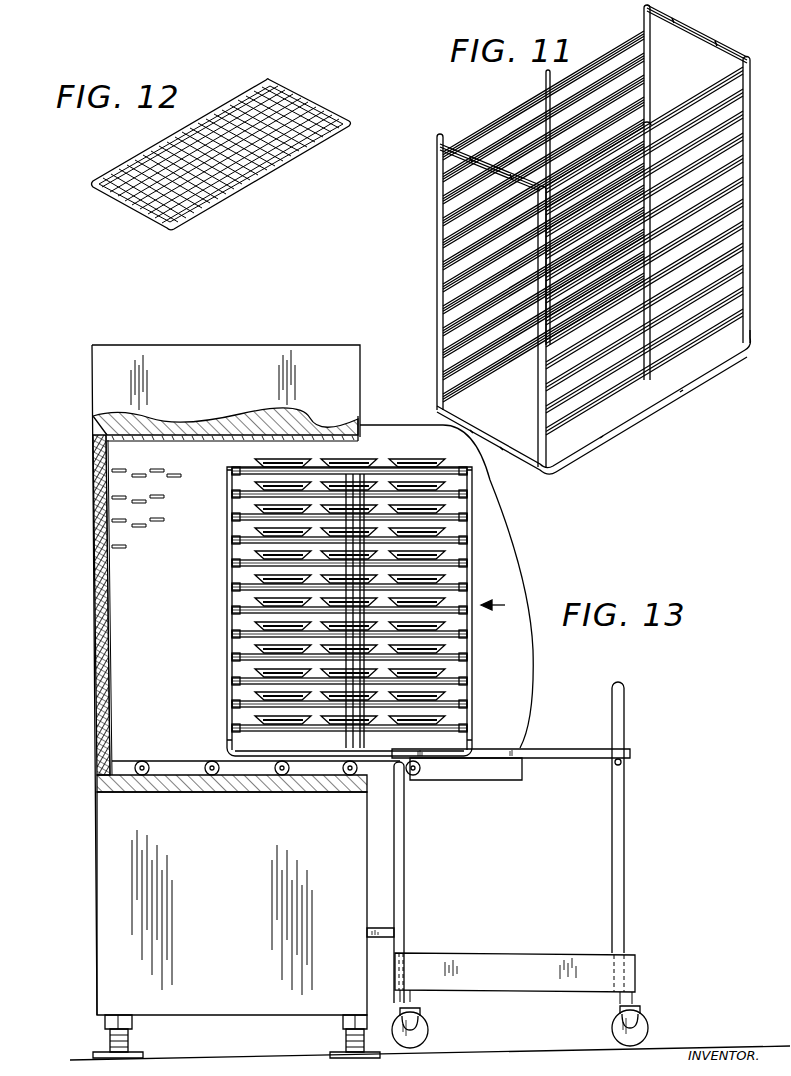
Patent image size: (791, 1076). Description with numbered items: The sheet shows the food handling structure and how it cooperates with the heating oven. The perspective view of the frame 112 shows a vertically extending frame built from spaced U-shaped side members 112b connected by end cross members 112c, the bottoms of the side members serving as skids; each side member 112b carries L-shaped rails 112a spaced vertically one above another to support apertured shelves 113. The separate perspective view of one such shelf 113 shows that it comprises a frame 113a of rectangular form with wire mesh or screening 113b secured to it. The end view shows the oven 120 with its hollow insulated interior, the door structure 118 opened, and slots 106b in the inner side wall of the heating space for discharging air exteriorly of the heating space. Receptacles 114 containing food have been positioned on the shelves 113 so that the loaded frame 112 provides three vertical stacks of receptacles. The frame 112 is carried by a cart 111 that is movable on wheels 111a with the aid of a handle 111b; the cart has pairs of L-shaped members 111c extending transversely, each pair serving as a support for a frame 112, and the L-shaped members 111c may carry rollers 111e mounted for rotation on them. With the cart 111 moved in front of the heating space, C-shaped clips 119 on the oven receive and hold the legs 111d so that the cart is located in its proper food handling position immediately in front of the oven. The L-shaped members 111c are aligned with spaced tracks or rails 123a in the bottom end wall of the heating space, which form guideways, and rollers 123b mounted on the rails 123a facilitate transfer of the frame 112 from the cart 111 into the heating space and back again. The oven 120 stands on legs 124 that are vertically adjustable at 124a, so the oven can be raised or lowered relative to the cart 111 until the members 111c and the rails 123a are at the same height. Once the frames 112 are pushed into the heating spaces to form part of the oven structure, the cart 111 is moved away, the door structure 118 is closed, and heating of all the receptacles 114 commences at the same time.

In FIG. 13, the cart 111 is at (536, 865).
In FIG. 13, the wheels 111a is at (646, 1026).
In FIG. 13, the handle 111b is at (622, 721).
In FIG. 13, the L-shaped members 111c is at (560, 759).
In FIG. 13, the legs 111d is at (405, 862).
In FIG. 13, the rollers 111e is at (412, 776).
In FIG. 11, the frame 112 is at (567, 254).
In FIG. 13, the frame 112 is at (348, 601).
In FIG. 11, the L-shaped rails 112a is at (597, 377).
In FIG. 13, the L-shaped rails 112a is at (248, 595).
In FIG. 11, the U-shaped side members 112b is at (673, 393).
In FIG. 13, the U-shaped side members 112b is at (477, 727).
In FIG. 11, the end cross members 112c is at (468, 158).
In FIG. 12, the apertured shelf 113 is at (221, 167).
In FIG. 12, the frame 113a is at (163, 142).
In FIG. 13, the frame 113a is at (243, 470).
In FIG. 12, the wire mesh or screening 113b is at (203, 197).
In FIG. 13, the receptacles 114 is at (260, 528).
In FIG. 13, the door structure 118 is at (400, 427).
In FIG. 13, the C-shaped clips 119 is at (405, 931).
In FIG. 13, the oven 120 is at (404, 702).
In FIG. 13, the tracks or rails 123a is at (190, 778).
In FIG. 13, the rollers 123b is at (160, 749).
In FIG. 13, the legs 124 is at (204, 1036).
In FIG. 13, the vertical adjustment 124a is at (130, 1048).
In FIG. 13, the slots 106b is at (113, 469).